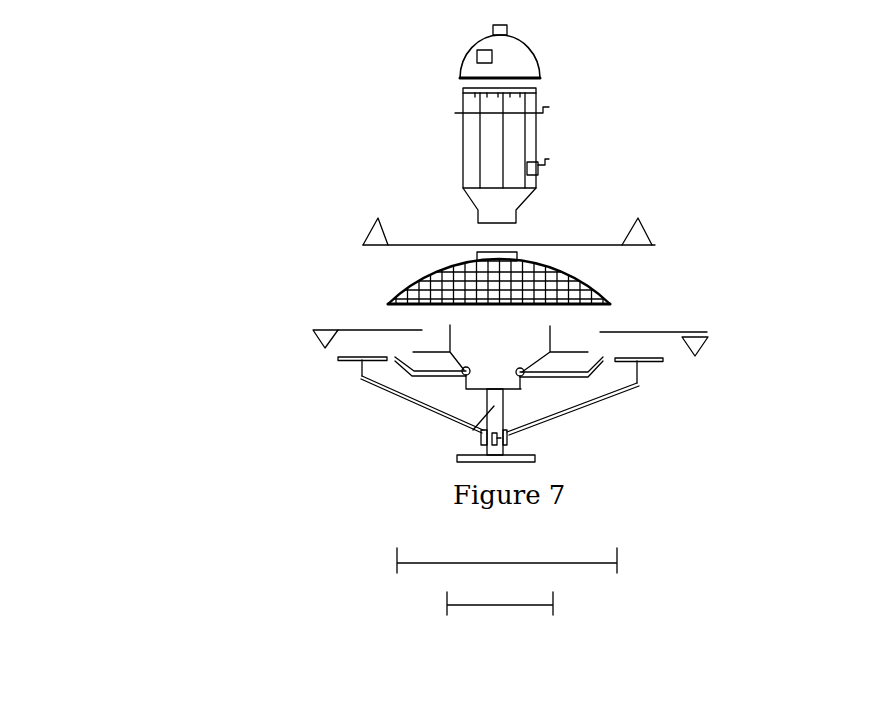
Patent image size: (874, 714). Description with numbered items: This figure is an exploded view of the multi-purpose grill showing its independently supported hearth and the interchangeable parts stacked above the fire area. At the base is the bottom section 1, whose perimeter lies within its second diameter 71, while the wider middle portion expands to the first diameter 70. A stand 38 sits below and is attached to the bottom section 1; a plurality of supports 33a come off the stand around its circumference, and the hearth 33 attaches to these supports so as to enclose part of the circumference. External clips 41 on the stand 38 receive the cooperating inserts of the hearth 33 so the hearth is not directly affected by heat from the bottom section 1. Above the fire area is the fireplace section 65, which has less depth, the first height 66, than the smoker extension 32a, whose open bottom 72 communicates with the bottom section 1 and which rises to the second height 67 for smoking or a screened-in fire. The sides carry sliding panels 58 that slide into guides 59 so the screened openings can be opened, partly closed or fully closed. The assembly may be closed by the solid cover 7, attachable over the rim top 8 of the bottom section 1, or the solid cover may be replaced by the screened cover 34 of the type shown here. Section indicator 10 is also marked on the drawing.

The bottom section 1 is at (460, 392).
The solid cover 7 is at (520, 48).
The rim top 8 is at (509, 224).
The section line 10 is at (510, 351).
The smoker extension 32a is at (550, 332).
The hearth 33 is at (658, 362).
The supports 33a is at (607, 398).
The screened cover 34 is at (587, 278).
The stand 38 is at (481, 431).
The external clips 41 is at (507, 437).
The sliding panels 58 is at (468, 130).
The guides 59 is at (538, 134).
The fireplace section 65 is at (563, 378).
The first height 66 is at (397, 360).
The second height 67 is at (450, 325).
The first diameter 70 is at (413, 565).
The second diameter 71 is at (500, 605).
The bottom 72 is at (478, 212).